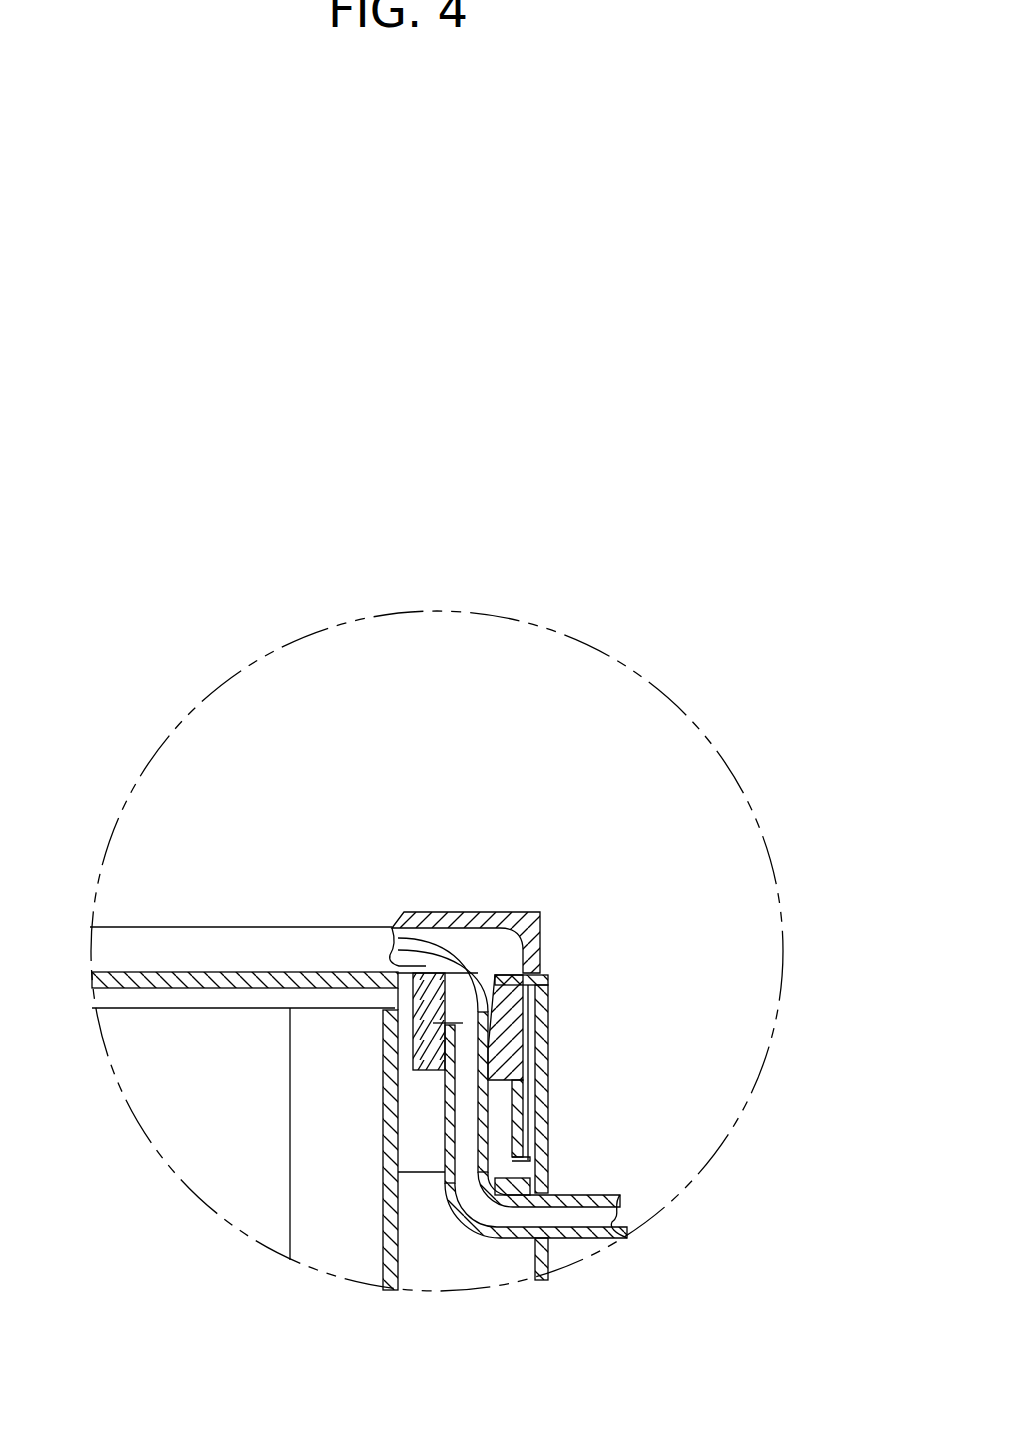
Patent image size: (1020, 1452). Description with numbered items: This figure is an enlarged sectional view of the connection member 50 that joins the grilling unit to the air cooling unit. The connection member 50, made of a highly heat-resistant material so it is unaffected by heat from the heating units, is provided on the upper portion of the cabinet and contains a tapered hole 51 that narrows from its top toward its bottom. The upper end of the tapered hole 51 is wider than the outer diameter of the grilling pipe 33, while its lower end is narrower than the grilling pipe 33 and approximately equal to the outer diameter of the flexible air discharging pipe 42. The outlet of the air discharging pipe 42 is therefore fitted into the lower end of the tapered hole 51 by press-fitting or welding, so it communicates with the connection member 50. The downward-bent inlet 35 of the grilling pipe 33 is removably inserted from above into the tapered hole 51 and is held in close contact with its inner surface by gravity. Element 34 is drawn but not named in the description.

The grilling pipe 33 is at (225, 932).
The cap member 34 is at (477, 878).
The inlet 35 is at (433, 1025).
The connection member 50 is at (560, 1016).
The tapered hole 51 is at (492, 1052).
The air discharging pipe 42 is at (648, 1202).